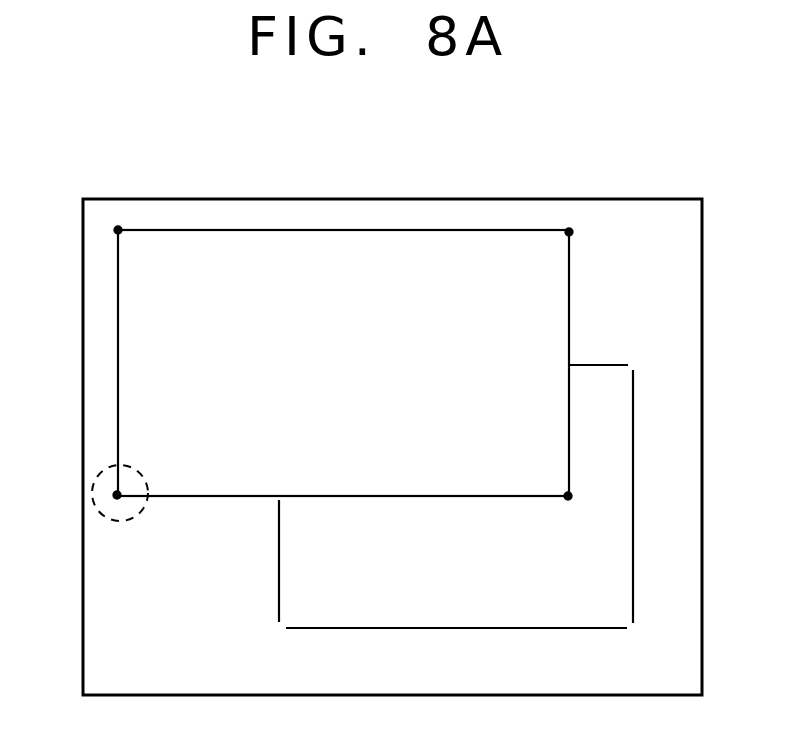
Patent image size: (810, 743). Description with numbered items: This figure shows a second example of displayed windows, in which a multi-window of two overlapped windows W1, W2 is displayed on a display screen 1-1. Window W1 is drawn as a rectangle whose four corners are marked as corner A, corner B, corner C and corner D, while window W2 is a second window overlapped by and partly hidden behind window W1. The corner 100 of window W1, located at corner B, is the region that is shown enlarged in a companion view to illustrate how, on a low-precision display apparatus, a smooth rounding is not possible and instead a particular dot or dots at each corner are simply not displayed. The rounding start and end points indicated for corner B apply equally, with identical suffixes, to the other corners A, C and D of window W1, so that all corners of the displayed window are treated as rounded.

The display screen 1-1 is at (553, 199).
The corner A is at (118, 230).
The corner B is at (110, 497).
The corner C is at (569, 232).
The corner D is at (568, 496).
The corner 100 is at (138, 472).
The window W1 is at (570, 320).
The window W2 is at (633, 410).